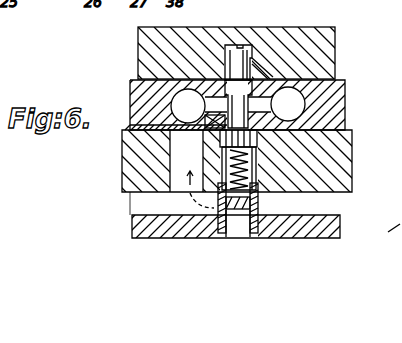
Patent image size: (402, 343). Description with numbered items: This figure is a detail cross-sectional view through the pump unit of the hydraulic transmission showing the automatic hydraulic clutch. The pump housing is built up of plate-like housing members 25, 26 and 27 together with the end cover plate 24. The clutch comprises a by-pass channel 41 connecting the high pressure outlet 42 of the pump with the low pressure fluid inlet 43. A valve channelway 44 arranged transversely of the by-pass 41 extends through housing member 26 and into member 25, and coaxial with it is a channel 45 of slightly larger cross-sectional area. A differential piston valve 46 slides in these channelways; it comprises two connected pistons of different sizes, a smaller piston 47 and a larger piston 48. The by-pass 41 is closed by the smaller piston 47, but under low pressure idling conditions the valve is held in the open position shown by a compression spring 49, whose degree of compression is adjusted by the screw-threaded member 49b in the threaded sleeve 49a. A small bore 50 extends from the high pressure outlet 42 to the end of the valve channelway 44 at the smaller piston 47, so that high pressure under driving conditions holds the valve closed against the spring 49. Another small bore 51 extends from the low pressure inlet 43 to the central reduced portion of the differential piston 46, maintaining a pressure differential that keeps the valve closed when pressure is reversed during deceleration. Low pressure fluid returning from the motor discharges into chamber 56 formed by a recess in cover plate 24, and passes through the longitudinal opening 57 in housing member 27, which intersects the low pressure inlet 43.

The cover plate 24 is at (328, 230).
The housing member 25 is at (322, 49).
The housing member 26 is at (332, 108).
The housing member 27 is at (340, 155).
The by-pass channel 41 is at (212, 80).
The high pressure outlet 42 is at (304, 103).
The low pressure fluid inlet 43 is at (167, 100).
The valve channelway 44 is at (254, 16).
The channel 45 is at (227, 160).
The differential piston valve 46 is at (199, 106).
The smaller piston 47 is at (240, 45).
The larger piston 48 is at (226, 137).
The compression spring 49 is at (254, 150).
The threaded sleeve 49a is at (256, 177).
The screw-threaded member 49b is at (262, 200).
The small bore 50 is at (266, 62).
The small bore 51 is at (132, 127).
The chamber 56 is at (150, 208).
The longitudinal opening 57 is at (176, 178).